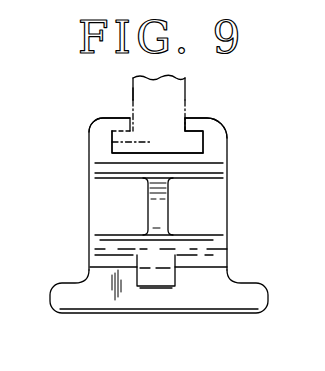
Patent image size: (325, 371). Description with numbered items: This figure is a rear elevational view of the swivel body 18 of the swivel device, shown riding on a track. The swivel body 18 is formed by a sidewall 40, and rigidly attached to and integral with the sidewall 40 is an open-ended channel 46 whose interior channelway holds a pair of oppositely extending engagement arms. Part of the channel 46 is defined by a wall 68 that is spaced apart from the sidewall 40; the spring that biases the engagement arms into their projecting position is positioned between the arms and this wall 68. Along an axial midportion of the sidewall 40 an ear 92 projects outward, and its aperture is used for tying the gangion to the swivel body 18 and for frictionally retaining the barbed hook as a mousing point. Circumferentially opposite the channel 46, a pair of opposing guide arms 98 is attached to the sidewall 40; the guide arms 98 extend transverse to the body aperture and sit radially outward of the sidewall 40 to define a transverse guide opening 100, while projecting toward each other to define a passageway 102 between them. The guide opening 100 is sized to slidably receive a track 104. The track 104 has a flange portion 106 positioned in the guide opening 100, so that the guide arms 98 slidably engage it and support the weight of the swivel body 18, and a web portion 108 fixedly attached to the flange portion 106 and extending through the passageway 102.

The swivel body 18 is at (229, 152).
The sidewall 40 is at (229, 209).
The open-ended channel 46 is at (197, 302).
The wall 68 is at (102, 316).
The ear 92 is at (160, 272).
The guide arms 98 is at (122, 123).
The transverse guide opening 100 is at (110, 131).
The passageway 102 is at (188, 118).
The track 104 is at (187, 92).
The flange portion 106 is at (110, 143).
The web portion 108 is at (132, 94).